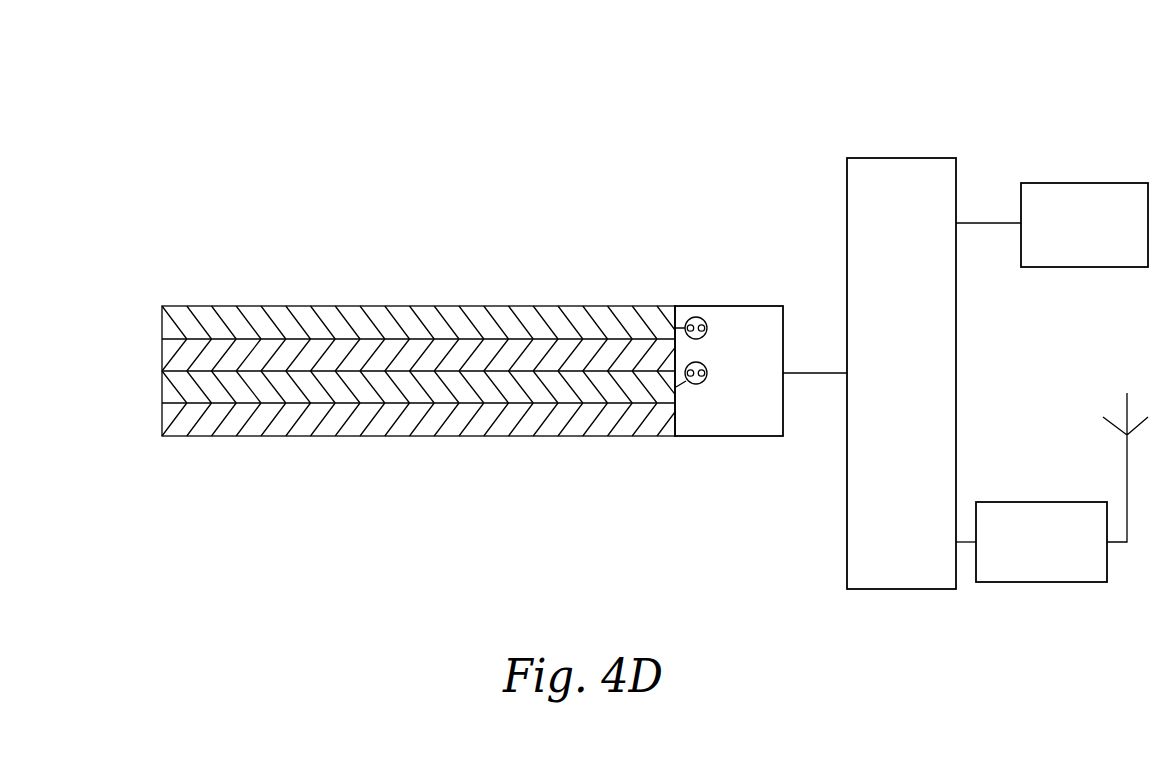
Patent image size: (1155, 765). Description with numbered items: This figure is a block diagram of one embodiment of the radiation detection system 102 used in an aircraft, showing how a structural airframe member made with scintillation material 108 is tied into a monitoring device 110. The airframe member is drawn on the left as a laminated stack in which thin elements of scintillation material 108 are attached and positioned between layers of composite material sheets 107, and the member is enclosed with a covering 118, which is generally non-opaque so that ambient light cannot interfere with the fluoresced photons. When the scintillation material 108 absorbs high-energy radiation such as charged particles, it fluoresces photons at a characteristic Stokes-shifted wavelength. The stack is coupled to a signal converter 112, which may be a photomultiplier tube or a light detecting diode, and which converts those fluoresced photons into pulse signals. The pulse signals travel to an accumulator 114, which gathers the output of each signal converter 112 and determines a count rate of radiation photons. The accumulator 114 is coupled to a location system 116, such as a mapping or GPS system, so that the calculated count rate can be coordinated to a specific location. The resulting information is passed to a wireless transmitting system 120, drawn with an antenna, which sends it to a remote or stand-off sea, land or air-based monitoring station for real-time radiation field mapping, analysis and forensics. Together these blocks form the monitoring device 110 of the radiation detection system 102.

The radiation detection system 102 is at (442, 201).
The composite material sheets 107 is at (162, 349).
The scintillation material 108 is at (162, 313).
The monitoring device 110 is at (936, 99).
The signal converter 112 is at (743, 306).
The accumulator 114 is at (883, 384).
The location system 116 is at (1066, 237).
The covering 118 is at (473, 306).
The wireless transmitting system 120 is at (1022, 554).